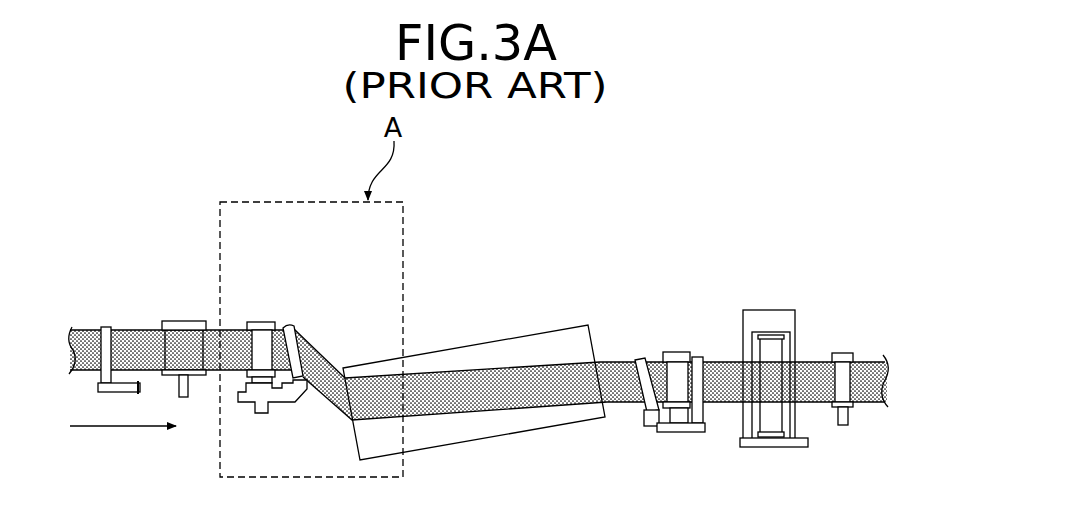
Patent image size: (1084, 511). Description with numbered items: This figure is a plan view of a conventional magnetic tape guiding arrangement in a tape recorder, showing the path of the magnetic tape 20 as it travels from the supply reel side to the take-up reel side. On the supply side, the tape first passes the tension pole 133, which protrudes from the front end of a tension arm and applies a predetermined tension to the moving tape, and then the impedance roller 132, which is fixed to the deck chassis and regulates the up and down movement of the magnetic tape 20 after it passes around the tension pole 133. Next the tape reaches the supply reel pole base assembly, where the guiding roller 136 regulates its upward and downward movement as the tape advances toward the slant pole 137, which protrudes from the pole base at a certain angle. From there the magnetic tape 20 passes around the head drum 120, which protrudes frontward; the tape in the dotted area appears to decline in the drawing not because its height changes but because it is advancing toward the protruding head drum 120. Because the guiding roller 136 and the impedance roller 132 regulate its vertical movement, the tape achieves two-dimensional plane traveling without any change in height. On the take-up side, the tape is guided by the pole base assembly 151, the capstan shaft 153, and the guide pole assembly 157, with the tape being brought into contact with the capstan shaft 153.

The magnetic tape 20 is at (872, 368).
The head drum 120 is at (493, 350).
The impedance roller 132 is at (178, 330).
The tension pole 133 is at (101, 330).
The guiding roller 136 is at (260, 330).
The slant pole 137 is at (290, 328).
The pole base assembly 151 is at (662, 338).
The capstan shaft 153 is at (770, 340).
The guide pole assembly 157 is at (843, 367).